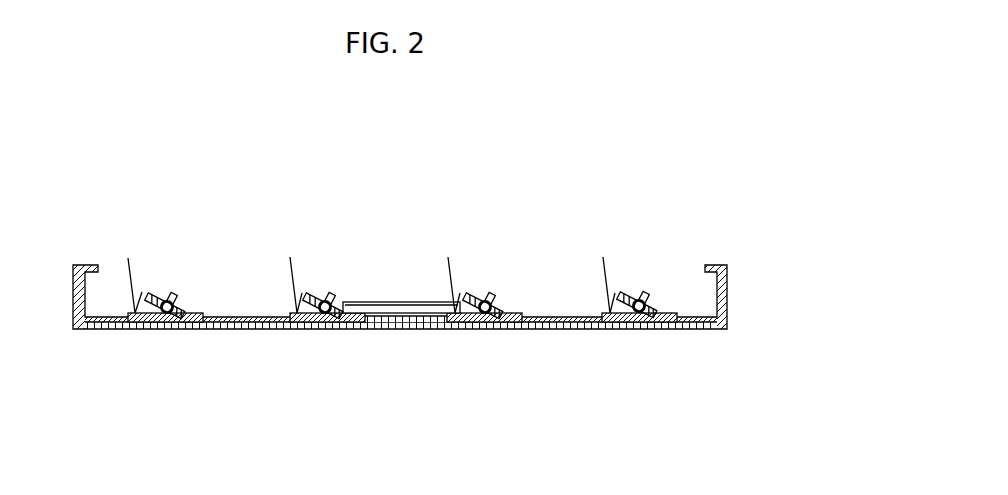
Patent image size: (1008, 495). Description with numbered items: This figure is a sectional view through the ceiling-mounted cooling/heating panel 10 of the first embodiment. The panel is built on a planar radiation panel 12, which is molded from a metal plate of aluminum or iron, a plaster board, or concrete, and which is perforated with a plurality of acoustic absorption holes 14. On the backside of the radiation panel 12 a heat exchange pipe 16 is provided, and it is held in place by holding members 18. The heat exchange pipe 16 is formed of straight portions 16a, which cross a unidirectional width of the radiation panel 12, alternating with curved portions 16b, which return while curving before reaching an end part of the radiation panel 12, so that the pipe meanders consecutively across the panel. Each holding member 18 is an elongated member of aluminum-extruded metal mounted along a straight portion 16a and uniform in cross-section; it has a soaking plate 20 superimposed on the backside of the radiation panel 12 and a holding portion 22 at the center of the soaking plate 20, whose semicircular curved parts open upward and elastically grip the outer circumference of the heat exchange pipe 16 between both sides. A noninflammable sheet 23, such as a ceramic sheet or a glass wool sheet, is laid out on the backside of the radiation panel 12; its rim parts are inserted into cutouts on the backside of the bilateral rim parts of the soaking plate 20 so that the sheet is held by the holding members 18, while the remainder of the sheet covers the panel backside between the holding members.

The ceiling-mounted cooling/heating panel 10 is at (627, 185).
The radiation panel 12 is at (562, 330).
The acoustic absorption holes 14 is at (432, 330).
The heat exchange pipe 16 is at (167, 297).
The straight portions 16a is at (327, 298).
The curved portions 16b is at (383, 310).
The holding member 18 is at (368, 271).
The soaking plate 20 is at (197, 317).
The holding portion 22 is at (187, 315).
The noninflammable sheet 23 is at (548, 317).